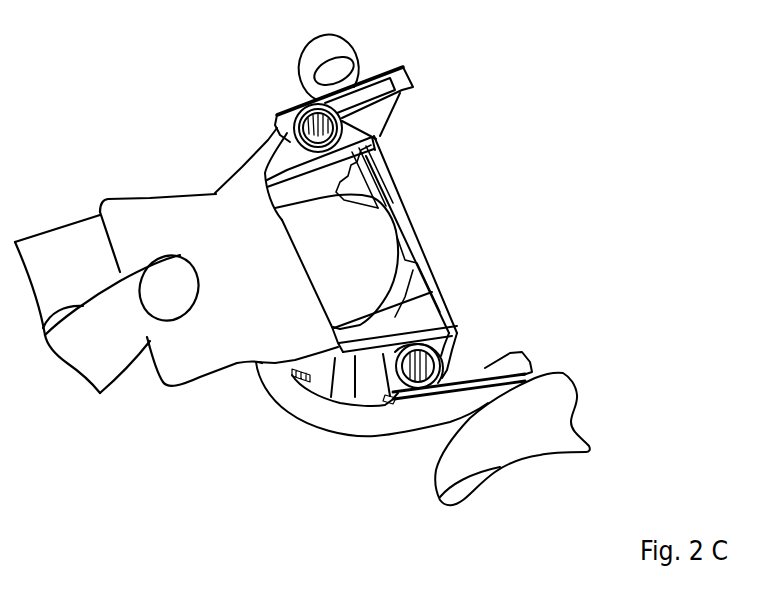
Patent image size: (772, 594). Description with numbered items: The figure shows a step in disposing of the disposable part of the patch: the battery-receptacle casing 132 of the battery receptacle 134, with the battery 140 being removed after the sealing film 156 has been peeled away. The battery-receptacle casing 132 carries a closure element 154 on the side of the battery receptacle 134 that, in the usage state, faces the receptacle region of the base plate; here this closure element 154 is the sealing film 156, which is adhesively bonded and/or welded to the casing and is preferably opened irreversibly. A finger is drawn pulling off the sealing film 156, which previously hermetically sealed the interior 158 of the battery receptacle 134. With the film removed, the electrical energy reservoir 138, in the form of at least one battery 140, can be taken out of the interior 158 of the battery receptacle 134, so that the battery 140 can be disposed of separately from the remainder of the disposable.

The closure element 154 is at (138, 246).
The sealing film 156 is at (157, 222).
The battery-receptacle casing 132 is at (419, 270).
The battery receptacle 134 is at (445, 241).
The electrical energy reservoir 138 is at (389, 228).
The battery 140 is at (362, 240).
The interior 158 is at (410, 318).